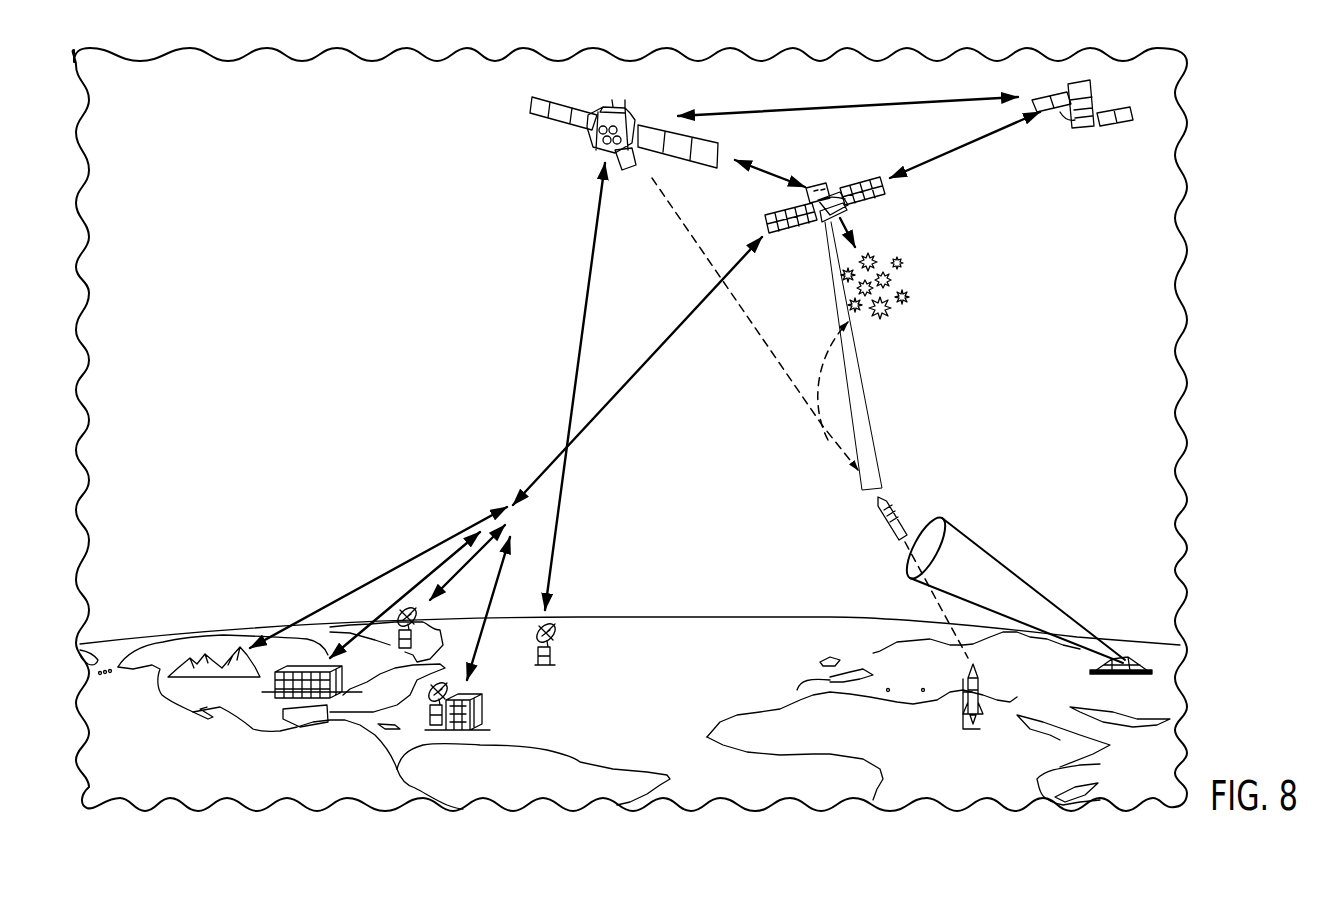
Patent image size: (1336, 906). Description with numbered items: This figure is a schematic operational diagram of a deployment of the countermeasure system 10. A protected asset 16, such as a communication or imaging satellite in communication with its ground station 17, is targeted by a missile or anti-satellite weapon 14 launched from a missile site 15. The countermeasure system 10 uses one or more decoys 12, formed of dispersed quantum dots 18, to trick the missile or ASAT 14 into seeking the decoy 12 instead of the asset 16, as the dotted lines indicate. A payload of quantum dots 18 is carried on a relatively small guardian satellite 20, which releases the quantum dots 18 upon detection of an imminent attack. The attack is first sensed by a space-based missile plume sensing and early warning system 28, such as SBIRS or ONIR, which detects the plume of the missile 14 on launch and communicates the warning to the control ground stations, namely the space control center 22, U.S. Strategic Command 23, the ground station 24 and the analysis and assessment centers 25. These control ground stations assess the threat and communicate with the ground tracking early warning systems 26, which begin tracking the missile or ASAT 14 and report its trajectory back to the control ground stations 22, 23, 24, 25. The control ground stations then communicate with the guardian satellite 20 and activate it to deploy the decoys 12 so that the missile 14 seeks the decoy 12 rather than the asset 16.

The countermeasure system 10 is at (1210, 125).
The decoy 12 is at (912, 280).
The missile or anti-satellite weapon (ASAT) 14 is at (878, 527).
The missile site 15 is at (990, 678).
The asset 16 is at (588, 147).
The ground station 17 is at (556, 658).
The quantum dots 18 is at (915, 323).
The guardian satellite 20 is at (868, 212).
The space control center 22 is at (205, 680).
The U.S. Strategic Command (USSTRATCOM) 23 is at (318, 702).
The ground station 24 is at (390, 638).
The analysis and assessment centers 25 is at (492, 713).
The ground tracking early warning systems 26 is at (1124, 655).
The space-based missile plume sensing and early warning system 28 is at (1108, 126).